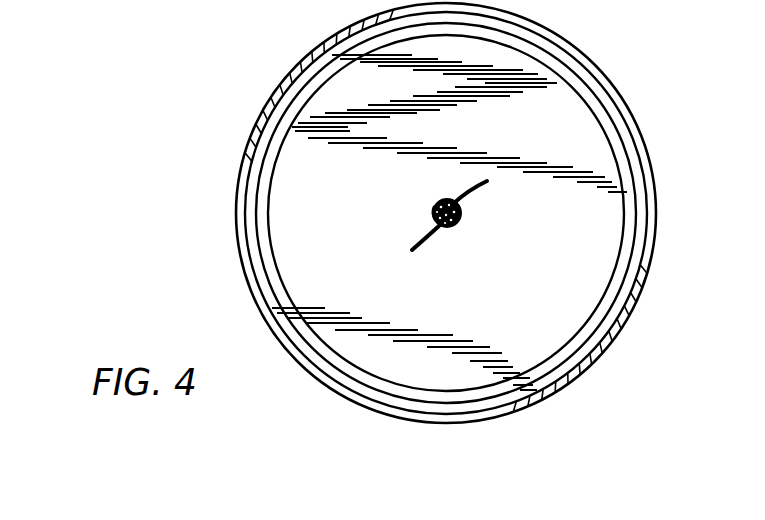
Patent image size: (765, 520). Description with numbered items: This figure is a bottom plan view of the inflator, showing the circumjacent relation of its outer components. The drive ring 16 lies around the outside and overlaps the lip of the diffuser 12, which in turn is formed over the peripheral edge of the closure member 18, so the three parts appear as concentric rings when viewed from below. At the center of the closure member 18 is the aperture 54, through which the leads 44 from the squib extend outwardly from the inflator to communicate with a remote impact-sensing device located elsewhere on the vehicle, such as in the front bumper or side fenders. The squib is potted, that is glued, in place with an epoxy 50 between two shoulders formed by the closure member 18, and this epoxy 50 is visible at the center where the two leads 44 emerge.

The diffuser 12 is at (380, 398).
The drive ring 16 is at (320, 380).
The closure member 18 is at (520, 408).
The leads 44 is at (480, 190).
The epoxy 50 is at (460, 217).
The aperture 54 is at (433, 215).